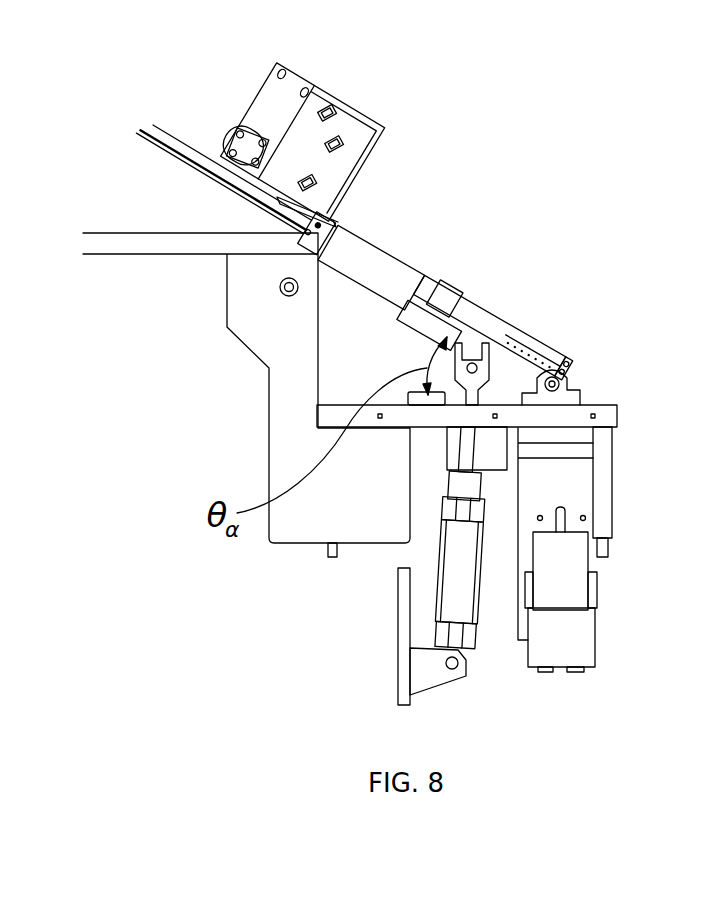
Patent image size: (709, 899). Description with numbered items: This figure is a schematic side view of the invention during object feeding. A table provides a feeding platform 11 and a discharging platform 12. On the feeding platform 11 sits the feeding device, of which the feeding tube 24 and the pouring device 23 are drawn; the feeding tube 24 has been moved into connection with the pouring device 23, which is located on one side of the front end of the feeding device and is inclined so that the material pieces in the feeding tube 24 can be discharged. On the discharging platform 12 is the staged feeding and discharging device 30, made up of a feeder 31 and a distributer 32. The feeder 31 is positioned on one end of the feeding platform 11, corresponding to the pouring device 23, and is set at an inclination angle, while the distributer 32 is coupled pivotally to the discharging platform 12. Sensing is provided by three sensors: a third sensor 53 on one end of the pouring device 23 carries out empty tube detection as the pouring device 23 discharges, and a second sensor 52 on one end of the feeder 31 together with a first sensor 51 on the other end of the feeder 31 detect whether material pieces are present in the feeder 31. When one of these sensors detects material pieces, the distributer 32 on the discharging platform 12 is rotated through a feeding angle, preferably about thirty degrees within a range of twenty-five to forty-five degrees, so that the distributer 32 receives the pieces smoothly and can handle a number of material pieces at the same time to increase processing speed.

The feeding platform 11 is at (125, 233).
The discharging platform 12 is at (610, 407).
The pouring device 23 is at (370, 104).
The feeding tube 24 is at (178, 144).
The staged feeding and discharging device 30 is at (480, 122).
The feeder 31 is at (388, 272).
The distributer 32 is at (500, 328).
The first sensor 51 is at (435, 282).
The second sensor 52 is at (342, 225).
The third sensor 53 is at (316, 226).